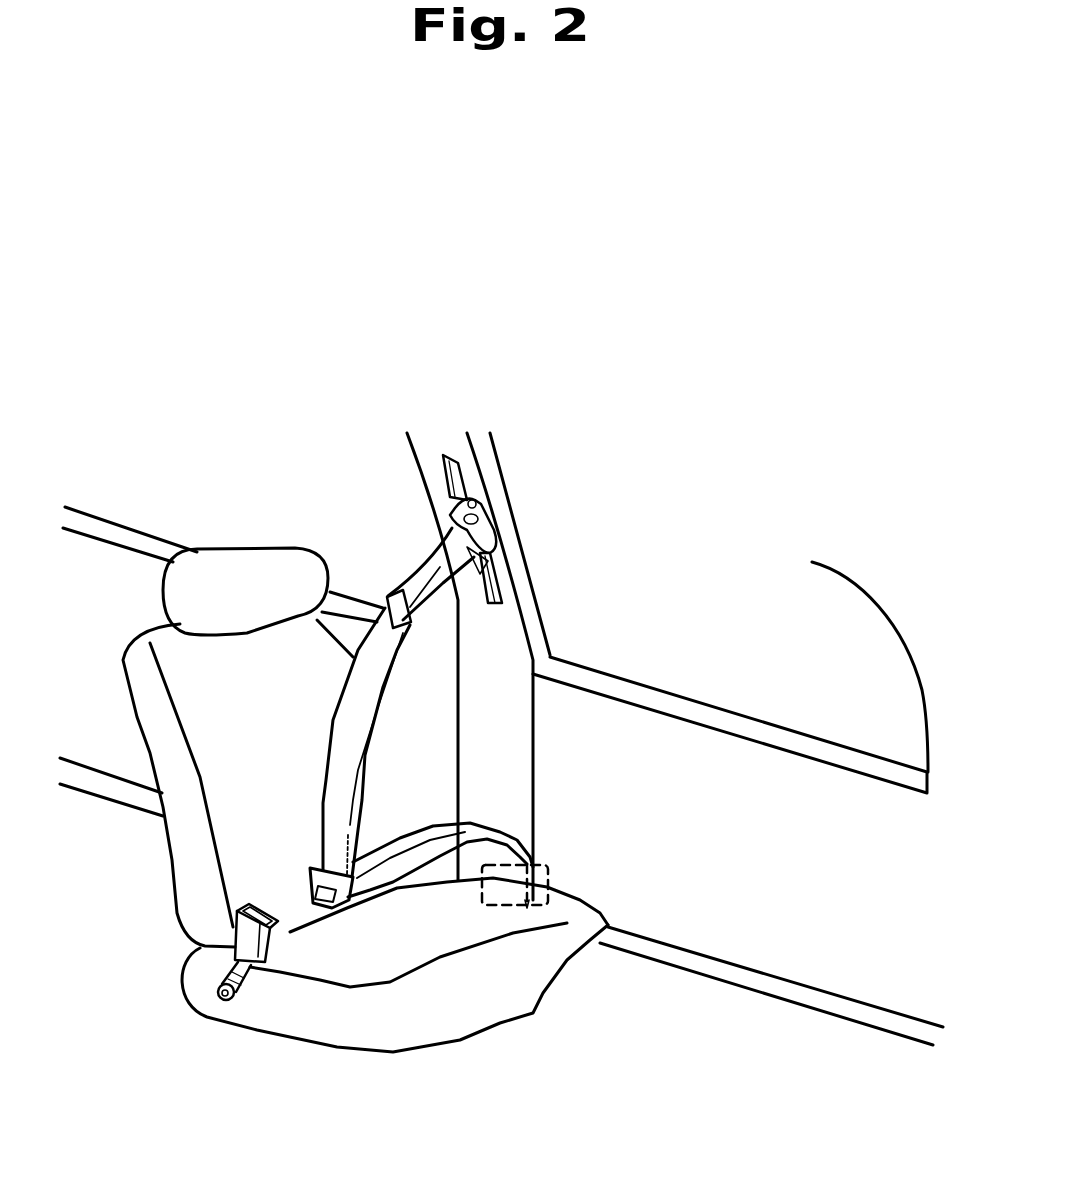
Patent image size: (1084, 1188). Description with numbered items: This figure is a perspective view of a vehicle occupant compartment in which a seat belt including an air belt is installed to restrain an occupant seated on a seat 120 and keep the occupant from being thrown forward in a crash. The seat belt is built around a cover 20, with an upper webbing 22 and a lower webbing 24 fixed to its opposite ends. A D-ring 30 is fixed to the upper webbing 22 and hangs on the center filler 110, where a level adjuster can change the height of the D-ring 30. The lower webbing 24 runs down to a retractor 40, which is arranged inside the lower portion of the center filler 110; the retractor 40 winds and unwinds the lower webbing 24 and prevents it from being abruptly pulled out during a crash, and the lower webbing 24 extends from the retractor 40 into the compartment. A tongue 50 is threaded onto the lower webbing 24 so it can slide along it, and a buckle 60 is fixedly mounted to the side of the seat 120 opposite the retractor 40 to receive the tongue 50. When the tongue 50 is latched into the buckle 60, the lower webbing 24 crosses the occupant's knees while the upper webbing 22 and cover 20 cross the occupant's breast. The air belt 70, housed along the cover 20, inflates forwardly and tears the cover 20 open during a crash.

The cover 20 is at (360, 728).
The upper webbing 22 is at (437, 575).
The lower webbing 24 is at (330, 845).
The D-ring 30 is at (490, 520).
The retractor 40 is at (548, 862).
The tongue 50 is at (338, 884).
The buckle 60 is at (237, 937).
The air belt 70 is at (452, 447).
The center filler 110 is at (518, 537).
The seat 120 is at (473, 1035).